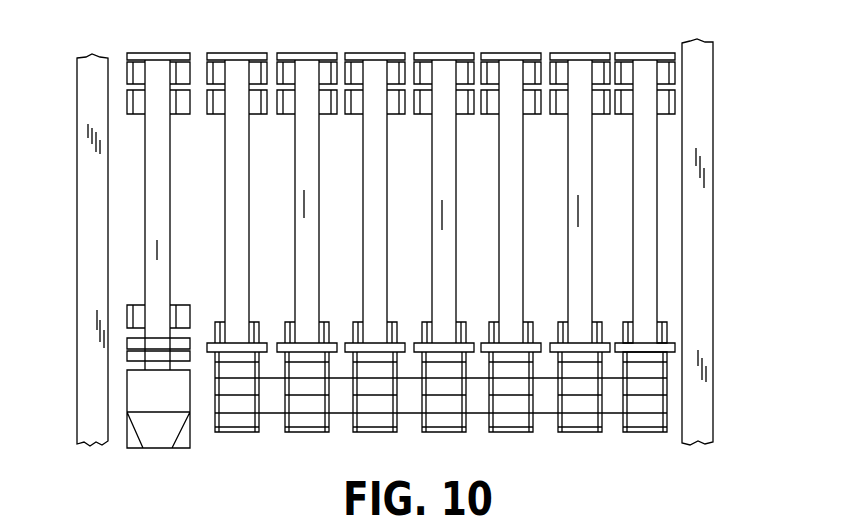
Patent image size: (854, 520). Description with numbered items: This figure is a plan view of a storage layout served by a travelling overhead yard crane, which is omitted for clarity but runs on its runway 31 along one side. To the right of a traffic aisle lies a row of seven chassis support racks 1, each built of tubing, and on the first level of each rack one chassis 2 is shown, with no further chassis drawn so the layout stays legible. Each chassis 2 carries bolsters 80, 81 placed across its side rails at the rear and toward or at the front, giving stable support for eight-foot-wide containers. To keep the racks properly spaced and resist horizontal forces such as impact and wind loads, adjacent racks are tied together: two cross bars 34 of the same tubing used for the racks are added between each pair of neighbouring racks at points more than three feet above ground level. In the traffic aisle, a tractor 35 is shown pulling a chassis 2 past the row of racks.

The chassis support rack 1 is at (358, 438).
The chassis 2 is at (222, 187).
The runway 31 is at (87, 407).
The cross bars 34 is at (478, 378).
The tractor 35 is at (150, 450).
The bolster 80 is at (674, 342).
The bolster 81 is at (647, 52).